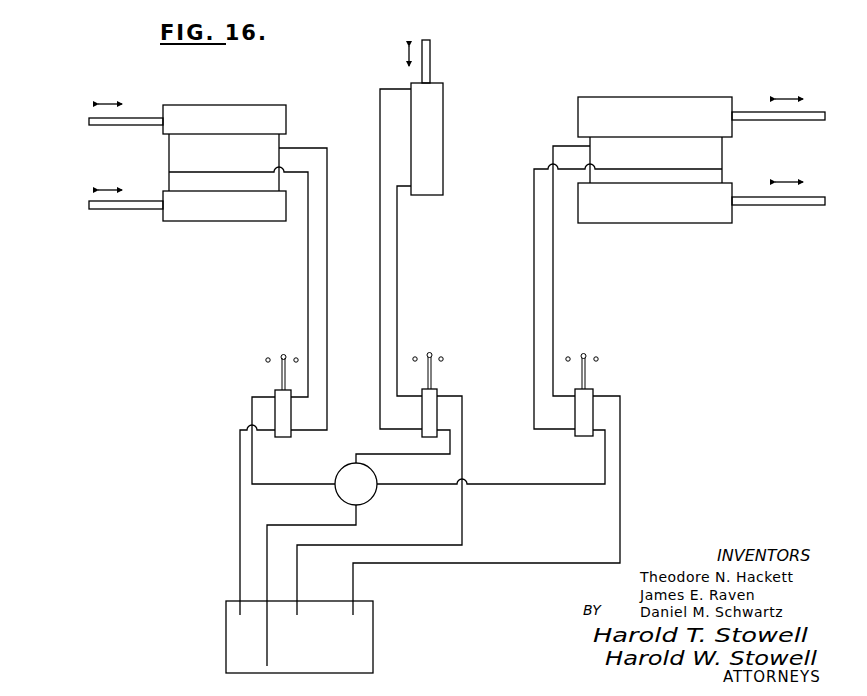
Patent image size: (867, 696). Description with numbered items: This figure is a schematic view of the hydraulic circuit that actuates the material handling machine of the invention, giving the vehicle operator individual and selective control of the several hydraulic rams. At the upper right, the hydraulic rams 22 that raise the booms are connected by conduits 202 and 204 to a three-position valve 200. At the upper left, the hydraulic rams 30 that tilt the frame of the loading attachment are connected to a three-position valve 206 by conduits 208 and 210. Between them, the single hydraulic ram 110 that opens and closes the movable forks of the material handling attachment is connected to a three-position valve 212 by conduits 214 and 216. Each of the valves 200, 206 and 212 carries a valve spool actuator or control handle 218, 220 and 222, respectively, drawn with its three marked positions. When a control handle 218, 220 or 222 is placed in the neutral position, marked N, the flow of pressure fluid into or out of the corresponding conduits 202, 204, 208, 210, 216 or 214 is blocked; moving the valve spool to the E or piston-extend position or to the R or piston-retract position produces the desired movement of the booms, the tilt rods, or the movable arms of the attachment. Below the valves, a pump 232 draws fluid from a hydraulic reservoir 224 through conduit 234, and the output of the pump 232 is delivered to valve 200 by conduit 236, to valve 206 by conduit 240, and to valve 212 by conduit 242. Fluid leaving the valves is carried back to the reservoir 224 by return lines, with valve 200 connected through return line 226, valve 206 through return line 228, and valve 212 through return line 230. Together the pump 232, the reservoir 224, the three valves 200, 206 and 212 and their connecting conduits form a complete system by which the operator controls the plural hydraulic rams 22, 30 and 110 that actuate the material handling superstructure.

The hydraulic rams 22 is at (632, 84).
The hydraulic rams 30 is at (267, 116).
The hydraulic ram 110 is at (433, 146).
The three-position valve 200 is at (587, 413).
The conduit 202 is at (553, 295).
The conduit 204 is at (534, 290).
The three-position valve 206 is at (280, 413).
The conduit 208 is at (308, 288).
The conduit 210 is at (328, 288).
The three-position valve 212 is at (433, 413).
The conduit 214 is at (380, 112).
The conduit 216 is at (397, 267).
The control handle 218 is at (587, 373).
The control handle 220 is at (282, 376).
The control handle 222 is at (432, 373).
The hydraulic reservoir 224 is at (373, 623).
The return line 226 is at (442, 565).
The return line 228 is at (238, 563).
The return line 230 is at (440, 523).
The pump 232 is at (373, 482).
The conduit 234 is at (268, 592).
The conduit 236 is at (550, 465).
The conduit 240 is at (310, 465).
The conduit 242 is at (380, 453).